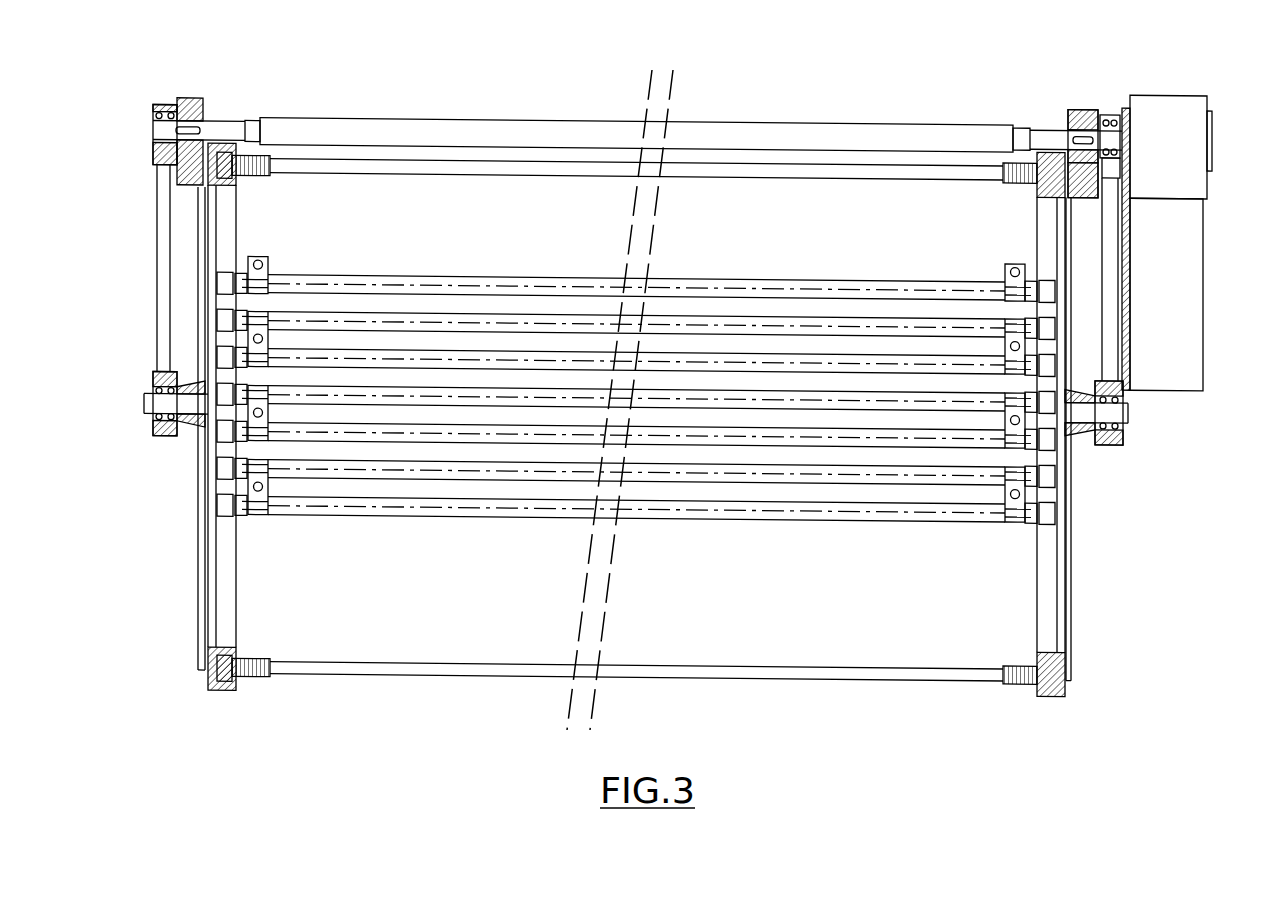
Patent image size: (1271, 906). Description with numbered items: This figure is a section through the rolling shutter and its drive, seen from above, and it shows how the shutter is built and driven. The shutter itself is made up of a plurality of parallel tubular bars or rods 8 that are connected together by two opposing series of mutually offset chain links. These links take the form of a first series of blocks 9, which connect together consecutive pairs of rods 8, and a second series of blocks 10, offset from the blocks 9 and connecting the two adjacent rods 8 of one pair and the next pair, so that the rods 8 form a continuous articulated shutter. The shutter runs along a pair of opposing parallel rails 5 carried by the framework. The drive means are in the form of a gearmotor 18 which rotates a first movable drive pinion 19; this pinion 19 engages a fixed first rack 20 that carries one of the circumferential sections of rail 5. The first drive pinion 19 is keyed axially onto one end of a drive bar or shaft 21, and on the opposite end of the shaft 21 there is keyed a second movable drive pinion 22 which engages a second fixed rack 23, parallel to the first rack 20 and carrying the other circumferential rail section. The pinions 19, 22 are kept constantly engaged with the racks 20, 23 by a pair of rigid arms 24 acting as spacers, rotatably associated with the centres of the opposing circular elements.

The rails 5 is at (227, 603).
The tubular bars or rods 8 is at (716, 165).
The first series of blocks 9 is at (257, 327).
The second series of blocks 10 is at (243, 375).
The gearmotor 18 is at (1192, 271).
The first movable drive pinion 19 is at (1080, 97).
The first rack 20 is at (1112, 346).
The drive bar or shaft 21 is at (728, 128).
The second movable drive pinion 22 is at (194, 100).
The second rack 23 is at (190, 175).
The rigid arms 24 is at (163, 291).